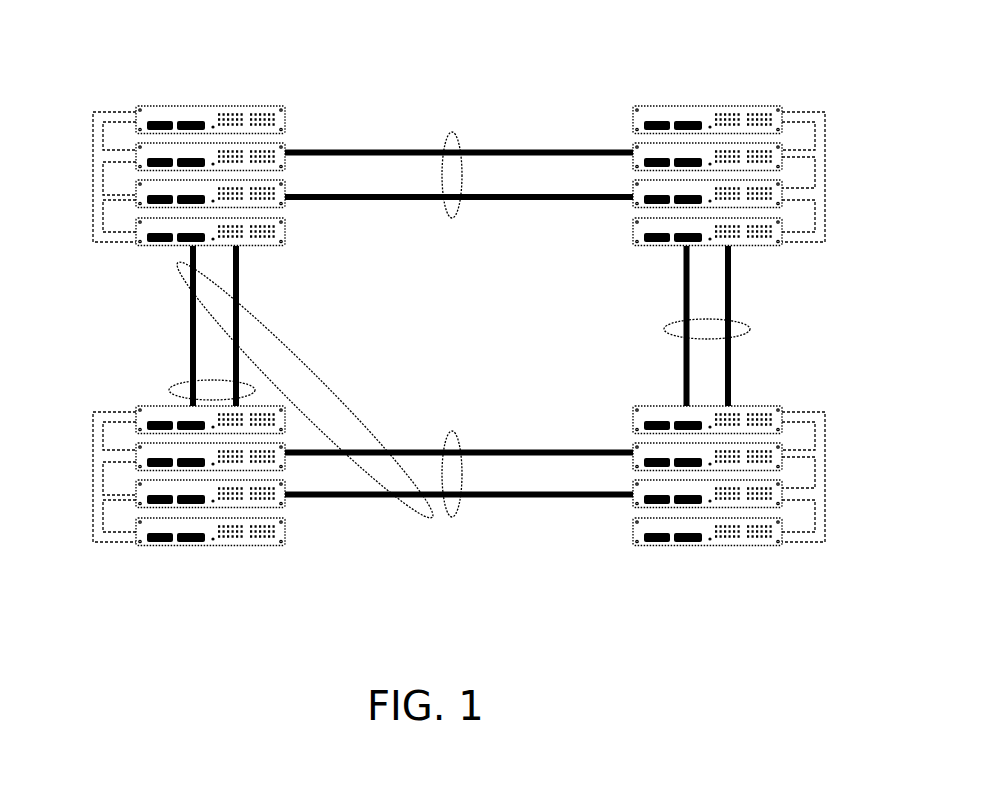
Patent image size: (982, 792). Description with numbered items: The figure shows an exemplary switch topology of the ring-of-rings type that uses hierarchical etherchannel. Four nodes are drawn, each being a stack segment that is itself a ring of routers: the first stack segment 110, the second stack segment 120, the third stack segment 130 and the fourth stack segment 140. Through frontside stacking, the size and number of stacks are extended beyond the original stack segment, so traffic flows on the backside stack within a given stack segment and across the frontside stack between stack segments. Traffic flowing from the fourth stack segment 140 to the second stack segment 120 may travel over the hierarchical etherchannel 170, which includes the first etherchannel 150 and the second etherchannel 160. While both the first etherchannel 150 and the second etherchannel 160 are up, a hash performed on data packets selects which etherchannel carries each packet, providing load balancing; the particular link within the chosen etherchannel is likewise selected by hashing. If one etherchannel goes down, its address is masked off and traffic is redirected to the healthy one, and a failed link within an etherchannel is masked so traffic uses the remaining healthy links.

The stack segment 1 110 is at (290, 108).
The stack segment 2 120 is at (778, 108).
The stack segment 3 130 is at (763, 403).
The stack segment 4 140 is at (285, 543).
The etherchannel 1 150 is at (187, 387).
The etherchannel 2 160 is at (458, 433).
The hierarchical etherchannel 1 170 is at (267, 320).